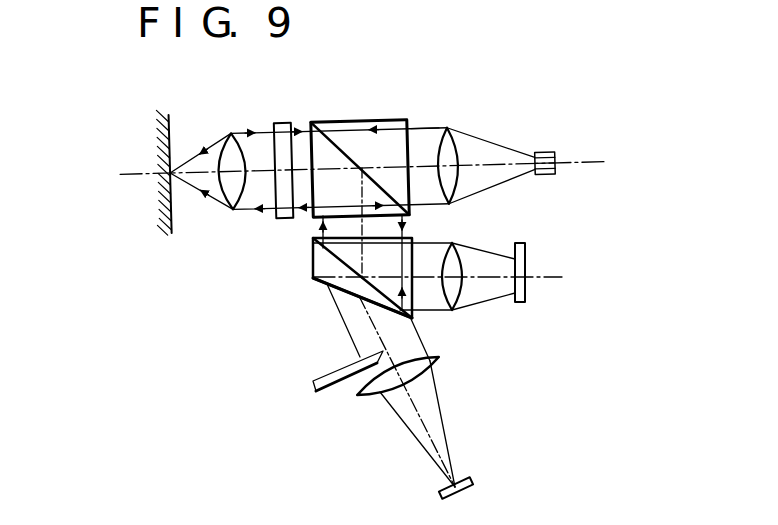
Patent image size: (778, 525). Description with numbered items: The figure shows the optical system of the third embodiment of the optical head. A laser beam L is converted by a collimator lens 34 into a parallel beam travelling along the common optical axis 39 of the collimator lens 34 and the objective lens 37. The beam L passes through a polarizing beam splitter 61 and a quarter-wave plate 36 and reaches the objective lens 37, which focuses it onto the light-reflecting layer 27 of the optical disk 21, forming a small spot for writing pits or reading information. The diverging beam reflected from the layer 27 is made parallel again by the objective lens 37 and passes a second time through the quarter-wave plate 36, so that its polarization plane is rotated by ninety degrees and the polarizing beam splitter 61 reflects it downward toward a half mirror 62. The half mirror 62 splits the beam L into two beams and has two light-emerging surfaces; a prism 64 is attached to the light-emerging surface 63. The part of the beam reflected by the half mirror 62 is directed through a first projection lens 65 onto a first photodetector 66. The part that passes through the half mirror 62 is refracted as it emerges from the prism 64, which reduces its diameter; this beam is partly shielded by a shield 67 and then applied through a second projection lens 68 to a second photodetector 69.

The optical disk 21 is at (158, 222).
The light-reflecting layer 27 is at (173, 222).
The collimator lens 34 is at (451, 134).
The quarter-wave plate 36 is at (283, 120).
The objective lens 37 is at (223, 144).
The common optical axis 39 is at (541, 156).
The polarizing beam splitter 61 is at (389, 120).
The half mirror 62 is at (313, 238).
The light-emerging surface 63 is at (313, 278).
The prism 64 is at (342, 291).
The first projection lens 65 is at (455, 251).
The first photodetector 66 is at (525, 252).
The shield 67 is at (330, 391).
The second projection lens 68 is at (440, 358).
The second photodetector 69 is at (471, 483).
The laser beam L is at (428, 129).